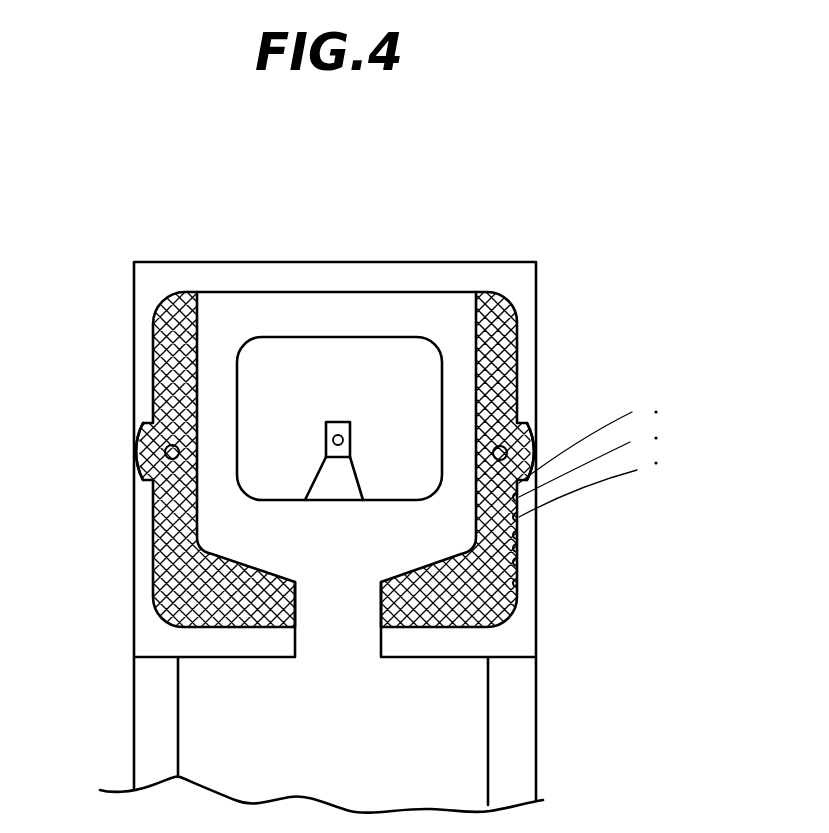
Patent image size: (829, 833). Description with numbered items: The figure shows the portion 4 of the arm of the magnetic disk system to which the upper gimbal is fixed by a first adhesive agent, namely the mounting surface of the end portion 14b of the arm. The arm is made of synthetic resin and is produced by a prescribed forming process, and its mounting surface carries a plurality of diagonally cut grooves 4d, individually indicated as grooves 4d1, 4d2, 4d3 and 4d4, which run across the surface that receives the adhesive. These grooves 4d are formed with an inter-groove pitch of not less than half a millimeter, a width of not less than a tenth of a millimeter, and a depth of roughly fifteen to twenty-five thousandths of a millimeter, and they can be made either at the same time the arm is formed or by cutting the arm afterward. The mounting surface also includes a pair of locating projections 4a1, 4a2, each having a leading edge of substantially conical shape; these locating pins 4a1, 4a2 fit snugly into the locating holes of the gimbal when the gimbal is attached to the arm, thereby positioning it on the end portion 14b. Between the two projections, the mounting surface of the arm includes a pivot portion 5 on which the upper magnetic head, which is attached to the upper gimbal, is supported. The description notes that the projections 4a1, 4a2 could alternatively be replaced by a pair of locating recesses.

The mounting surface portion of arm 4 is at (168, 283).
The locating projection 4a1 is at (166, 452).
The locating projection 4a2 is at (495, 452).
The diagonally cut grooves 4d is at (700, 390).
The diagonally cut groove 4d1 is at (519, 583).
The diagonally cut groove 4d2 is at (519, 562).
The diagonally cut groove 4d3 is at (519, 548).
The diagonally cut groove 4d4 is at (519, 535).
The end portion of arm 14b is at (358, 273).
The pivot portion 5 is at (326, 440).